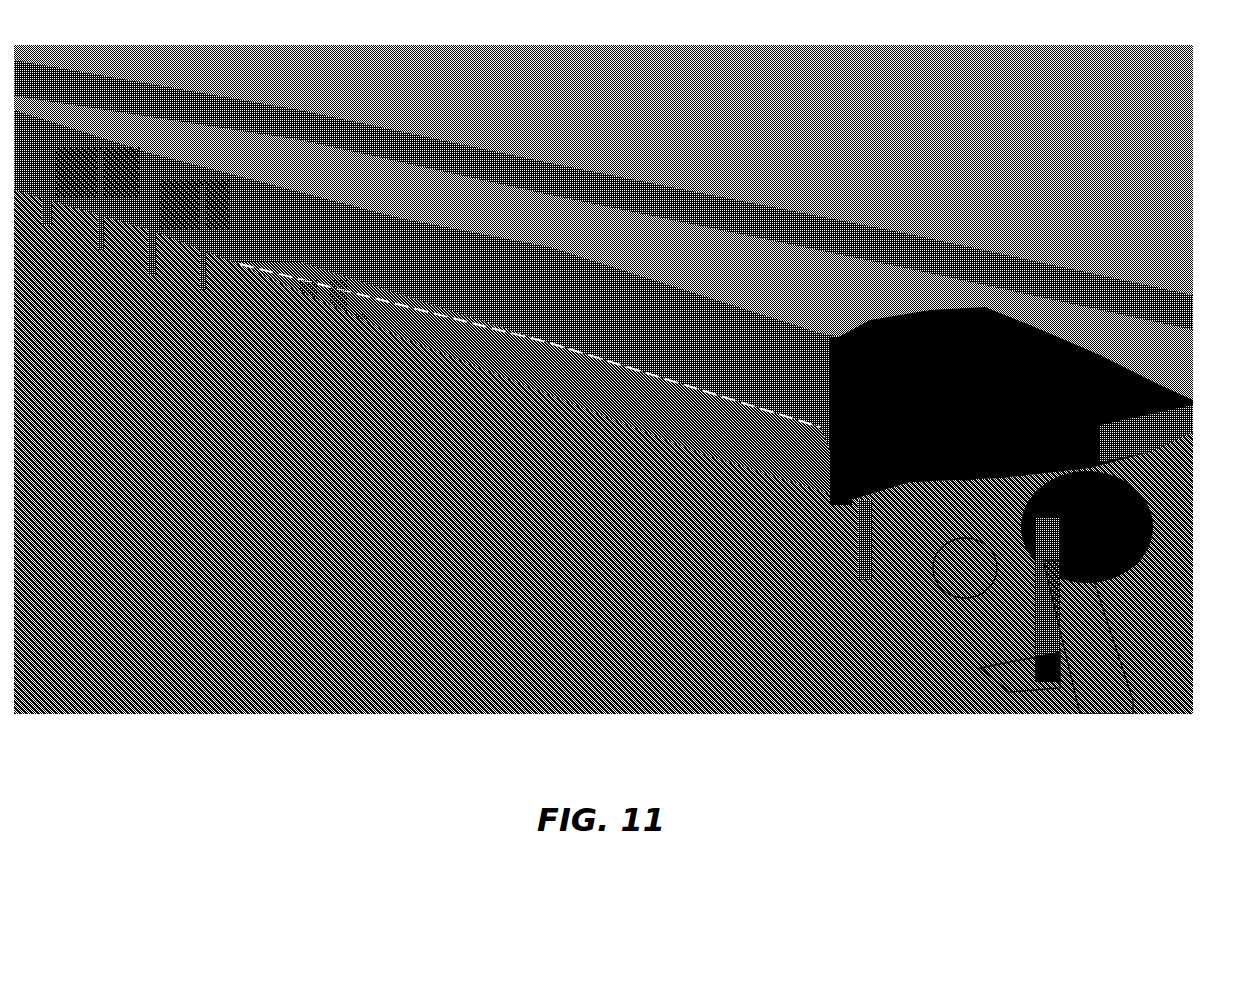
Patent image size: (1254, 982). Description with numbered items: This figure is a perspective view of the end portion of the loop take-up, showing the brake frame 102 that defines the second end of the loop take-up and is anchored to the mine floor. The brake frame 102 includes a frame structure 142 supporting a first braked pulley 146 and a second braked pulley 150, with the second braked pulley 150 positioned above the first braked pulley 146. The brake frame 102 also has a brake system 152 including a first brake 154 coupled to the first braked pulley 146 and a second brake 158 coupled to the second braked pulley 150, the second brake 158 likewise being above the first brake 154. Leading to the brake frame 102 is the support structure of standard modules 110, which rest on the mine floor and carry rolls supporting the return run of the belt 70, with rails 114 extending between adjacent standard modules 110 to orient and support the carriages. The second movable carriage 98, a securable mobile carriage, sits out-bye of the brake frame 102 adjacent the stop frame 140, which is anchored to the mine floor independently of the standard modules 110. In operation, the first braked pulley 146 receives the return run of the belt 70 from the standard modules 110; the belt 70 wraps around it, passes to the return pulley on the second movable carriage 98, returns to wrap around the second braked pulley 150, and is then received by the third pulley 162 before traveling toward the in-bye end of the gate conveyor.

The belt 70 is at (245, 112).
The second movable carriage 98 is at (292, 178).
The brake frame 102 is at (912, 289).
The standard modules 110 is at (334, 358).
The rails 114 is at (286, 295).
The stop frame 140 is at (98, 262).
The frame structure 142 is at (1110, 624).
The first braked pulley 146 is at (1125, 549).
The second braked pulley 150 is at (1127, 433).
The brake system 152 is at (884, 587).
The first brake 154 is at (950, 583).
The second brake 158 is at (947, 453).
The third pulley 162 is at (840, 337).